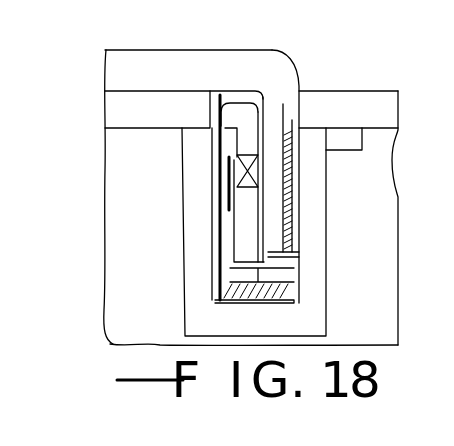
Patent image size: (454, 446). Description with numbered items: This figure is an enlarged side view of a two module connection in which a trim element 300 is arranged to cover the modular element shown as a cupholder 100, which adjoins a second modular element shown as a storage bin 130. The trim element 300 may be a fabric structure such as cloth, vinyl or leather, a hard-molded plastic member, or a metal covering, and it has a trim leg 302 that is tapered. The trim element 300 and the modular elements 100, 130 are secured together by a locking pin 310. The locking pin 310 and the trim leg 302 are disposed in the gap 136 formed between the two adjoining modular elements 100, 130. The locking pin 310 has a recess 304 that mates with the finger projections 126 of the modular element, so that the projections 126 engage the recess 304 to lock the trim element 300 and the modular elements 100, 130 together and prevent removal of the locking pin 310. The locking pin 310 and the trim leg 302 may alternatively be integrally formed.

The cupholder 100 is at (141, 199).
The storage bin 130 is at (352, 208).
The trim element 300 is at (263, 62).
The trim leg 302 is at (277, 129).
The recess 304 is at (232, 160).
The trim locking projections 126 is at (232, 178).
The locking pin 310 is at (246, 236).
The gap 136 is at (268, 310).